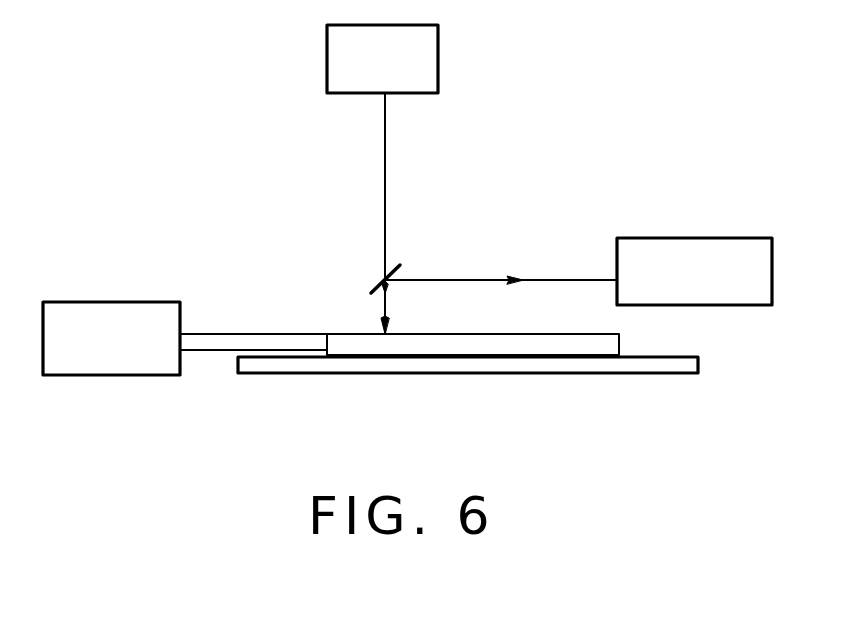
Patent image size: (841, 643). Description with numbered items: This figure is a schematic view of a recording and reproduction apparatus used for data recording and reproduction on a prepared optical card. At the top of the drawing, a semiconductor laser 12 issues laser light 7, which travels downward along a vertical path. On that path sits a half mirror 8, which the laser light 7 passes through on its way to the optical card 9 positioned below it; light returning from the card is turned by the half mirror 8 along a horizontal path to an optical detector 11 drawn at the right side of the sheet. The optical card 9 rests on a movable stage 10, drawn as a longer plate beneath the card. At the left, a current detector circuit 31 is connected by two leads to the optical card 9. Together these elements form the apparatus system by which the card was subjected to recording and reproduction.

The semiconductor laser 12 is at (438, 61).
The laser light 7 is at (385, 193).
The half mirror 8 is at (375, 289).
The optical detector 11 is at (687, 238).
The current detector circuit 31 is at (118, 302).
The optical card 9 is at (616, 345).
The movable stage 10 is at (699, 363).